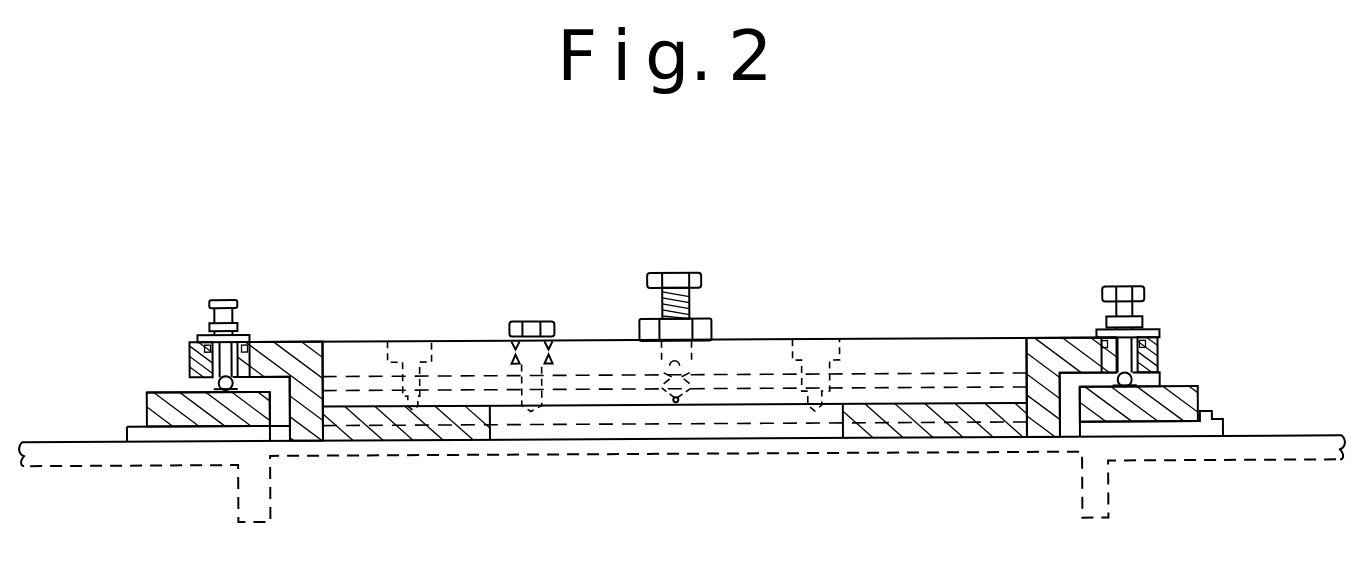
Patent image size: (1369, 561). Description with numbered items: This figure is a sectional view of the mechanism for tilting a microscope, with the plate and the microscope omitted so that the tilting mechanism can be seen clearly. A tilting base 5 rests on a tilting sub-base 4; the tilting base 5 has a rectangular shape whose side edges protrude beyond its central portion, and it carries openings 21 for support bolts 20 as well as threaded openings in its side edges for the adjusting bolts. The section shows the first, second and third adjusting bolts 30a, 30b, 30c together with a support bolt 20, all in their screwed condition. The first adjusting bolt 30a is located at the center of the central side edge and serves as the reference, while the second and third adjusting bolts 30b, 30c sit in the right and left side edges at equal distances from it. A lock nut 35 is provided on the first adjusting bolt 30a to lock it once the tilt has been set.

The tilting sub-base 4 is at (158, 396).
The tilting base 5 is at (288, 350).
The support bolt 20 is at (533, 322).
The opening for support bolt 21 is at (834, 336).
The first adjusting bolt 30a is at (703, 300).
The second adjusting bolt 30b is at (222, 300).
The third adjusting bolt 30c is at (1128, 291).
The lock nut 35 is at (706, 321).